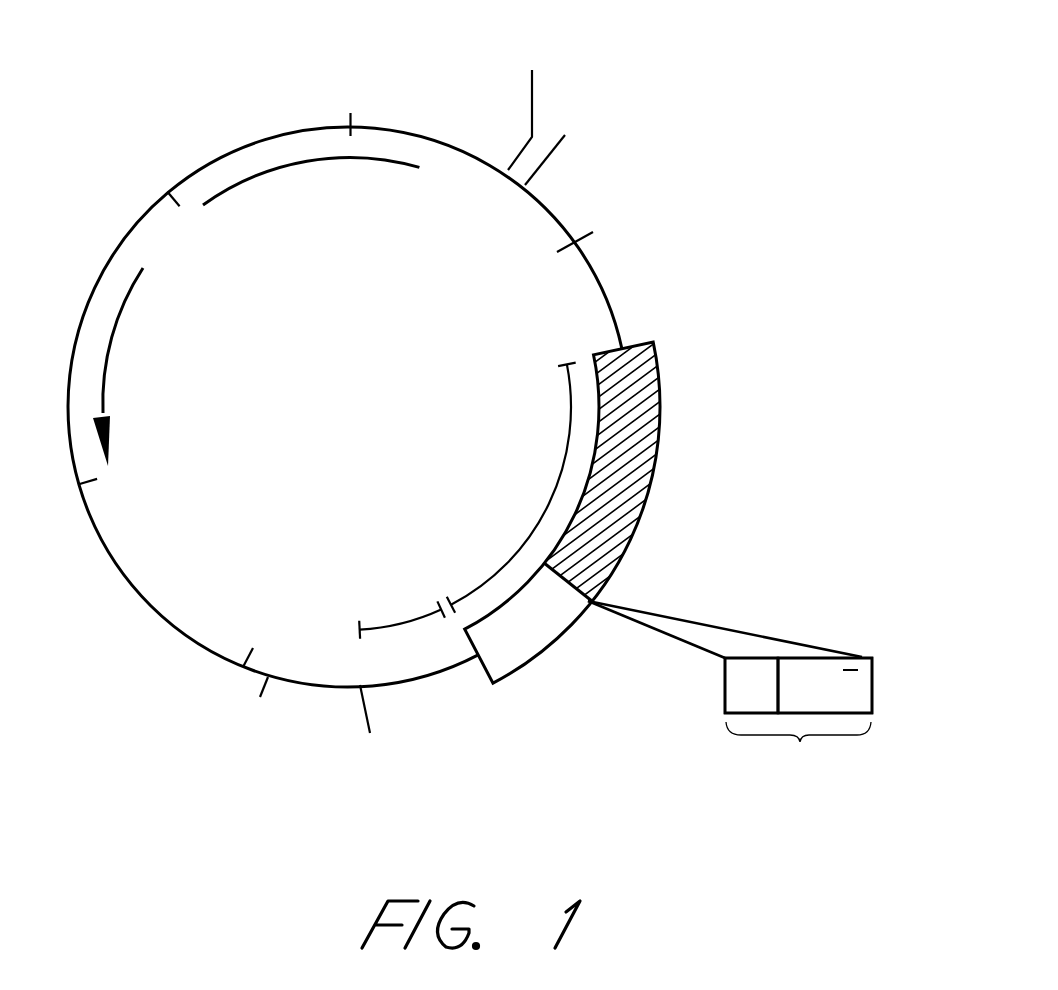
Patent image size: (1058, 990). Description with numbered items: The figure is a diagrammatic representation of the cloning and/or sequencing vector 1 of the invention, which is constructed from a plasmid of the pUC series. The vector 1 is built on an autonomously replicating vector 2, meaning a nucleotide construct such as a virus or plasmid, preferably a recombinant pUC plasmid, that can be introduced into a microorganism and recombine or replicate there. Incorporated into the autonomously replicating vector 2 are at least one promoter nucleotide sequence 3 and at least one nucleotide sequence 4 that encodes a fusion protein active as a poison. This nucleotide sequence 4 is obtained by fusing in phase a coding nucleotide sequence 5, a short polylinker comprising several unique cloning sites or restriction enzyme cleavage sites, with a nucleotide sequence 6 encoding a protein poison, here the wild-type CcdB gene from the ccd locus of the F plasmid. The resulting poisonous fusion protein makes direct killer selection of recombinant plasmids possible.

The cloning and/or sequencing vector 1 is at (800, 377).
The autonomously replicating vector 2 is at (215, 155).
The promoter nucleotide sequence 3 is at (545, 623).
The nucleotide sequence encoding a fusion protein active as a poison 4 is at (730, 688).
The coding nucleotide sequence (polylinker) 5 is at (751, 685).
The nucleotide sequence encoding a protein poison 6 is at (825, 685).